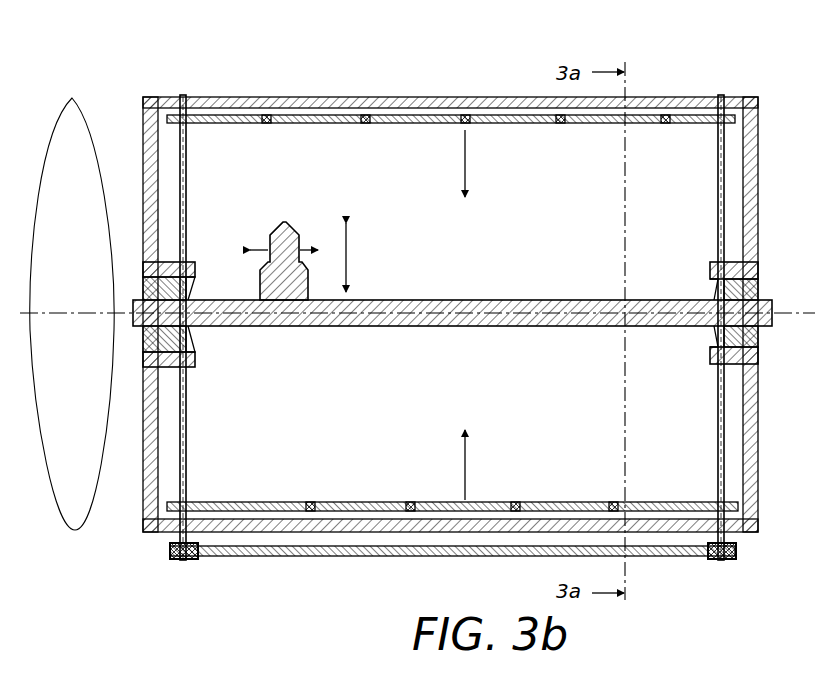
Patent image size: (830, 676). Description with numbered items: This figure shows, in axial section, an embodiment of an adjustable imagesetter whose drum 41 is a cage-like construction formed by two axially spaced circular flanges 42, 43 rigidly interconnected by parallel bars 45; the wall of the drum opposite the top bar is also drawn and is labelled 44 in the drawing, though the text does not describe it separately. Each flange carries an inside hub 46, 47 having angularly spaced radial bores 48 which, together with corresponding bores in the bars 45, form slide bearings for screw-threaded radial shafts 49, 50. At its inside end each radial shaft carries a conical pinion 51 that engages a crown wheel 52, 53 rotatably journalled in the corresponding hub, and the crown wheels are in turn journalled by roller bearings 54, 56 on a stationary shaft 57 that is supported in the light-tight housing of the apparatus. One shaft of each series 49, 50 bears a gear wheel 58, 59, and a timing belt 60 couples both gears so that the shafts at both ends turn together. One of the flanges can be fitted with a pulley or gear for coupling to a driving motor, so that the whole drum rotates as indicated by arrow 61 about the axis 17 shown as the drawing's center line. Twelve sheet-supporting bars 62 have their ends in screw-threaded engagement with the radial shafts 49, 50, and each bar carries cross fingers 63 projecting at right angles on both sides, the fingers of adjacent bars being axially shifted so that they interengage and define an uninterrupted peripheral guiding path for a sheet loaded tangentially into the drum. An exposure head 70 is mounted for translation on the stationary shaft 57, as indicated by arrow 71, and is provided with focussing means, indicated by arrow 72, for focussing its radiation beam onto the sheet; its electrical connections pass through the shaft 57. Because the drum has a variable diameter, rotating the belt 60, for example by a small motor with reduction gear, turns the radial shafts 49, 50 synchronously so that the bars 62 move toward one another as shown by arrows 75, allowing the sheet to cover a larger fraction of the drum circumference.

The rotor axis / centerline 17 is at (60, 312).
The drum 41 is at (377, 90).
The circular flange 42 is at (143, 150).
The circular flange 43 is at (758, 182).
The bottom wall 44 is at (450, 525).
The parallel bars 45 is at (455, 98).
The inside hub 46 is at (143, 218).
The inside hub 47 is at (735, 262).
The radial bores 48 is at (715, 260).
The screw-threaded radial shaft 49 is at (186, 155).
The screw-threaded radial shaft 50 is at (718, 157).
The conical pinion 51 is at (192, 356).
The crown wheel 52 is at (143, 352).
The crown wheel 53 is at (758, 340).
The roller bearing 54 is at (135, 306).
The roller bearing 56 is at (758, 292).
The stationary shaft 57 is at (498, 369).
The gear wheel 58 is at (164, 574).
The gear wheel 59 is at (759, 573).
The timing belt 60 is at (452, 575).
The arrow 61 is at (72, 100).
The sheet-supporting bar 62 is at (518, 115).
The fingers 63 is at (360, 115).
The exposure head 70 is at (283, 224).
The arrow 71 is at (300, 236).
The arrow 72 is at (348, 258).
The arrows 75 is at (441, 196).